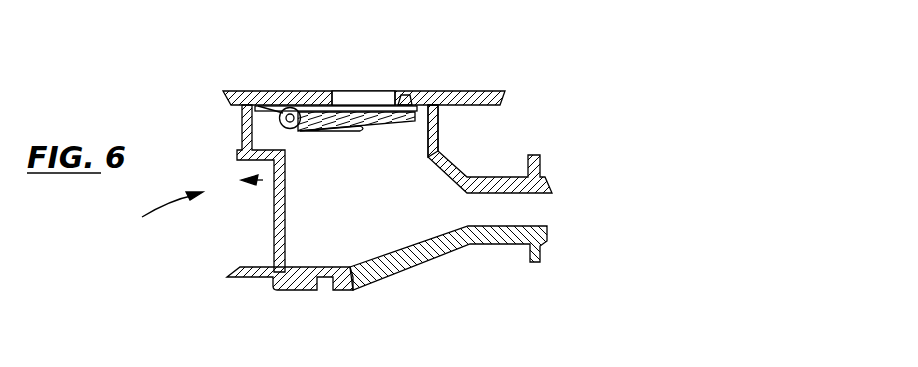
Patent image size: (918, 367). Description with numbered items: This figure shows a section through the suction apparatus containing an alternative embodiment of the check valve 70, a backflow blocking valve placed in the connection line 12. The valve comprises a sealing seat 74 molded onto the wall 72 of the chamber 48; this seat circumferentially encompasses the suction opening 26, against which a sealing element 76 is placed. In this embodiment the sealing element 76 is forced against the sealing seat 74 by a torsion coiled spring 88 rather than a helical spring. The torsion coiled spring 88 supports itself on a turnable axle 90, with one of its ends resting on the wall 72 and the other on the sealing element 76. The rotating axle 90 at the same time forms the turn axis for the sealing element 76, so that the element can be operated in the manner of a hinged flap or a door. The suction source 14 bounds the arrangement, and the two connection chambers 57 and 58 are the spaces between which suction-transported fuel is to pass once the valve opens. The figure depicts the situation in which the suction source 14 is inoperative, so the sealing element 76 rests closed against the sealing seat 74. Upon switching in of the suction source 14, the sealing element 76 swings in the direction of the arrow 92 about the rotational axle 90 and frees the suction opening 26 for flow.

The connection line 12 is at (460, 148).
The suction source 14 is at (385, 284).
The suction opening 26 is at (347, 97).
The chamber 48 is at (433, 88).
The connection chamber 57 is at (470, 212).
The connection chamber 58 is at (273, 209).
The check valve 70 is at (156, 210).
The wall 72 is at (260, 100).
The sealing seat 74 is at (407, 106).
The sealing element 76 is at (388, 120).
The torsion coiled spring 88 is at (275, 127).
The turnable axle 90 is at (289, 107).
The arrow 92 is at (313, 141).